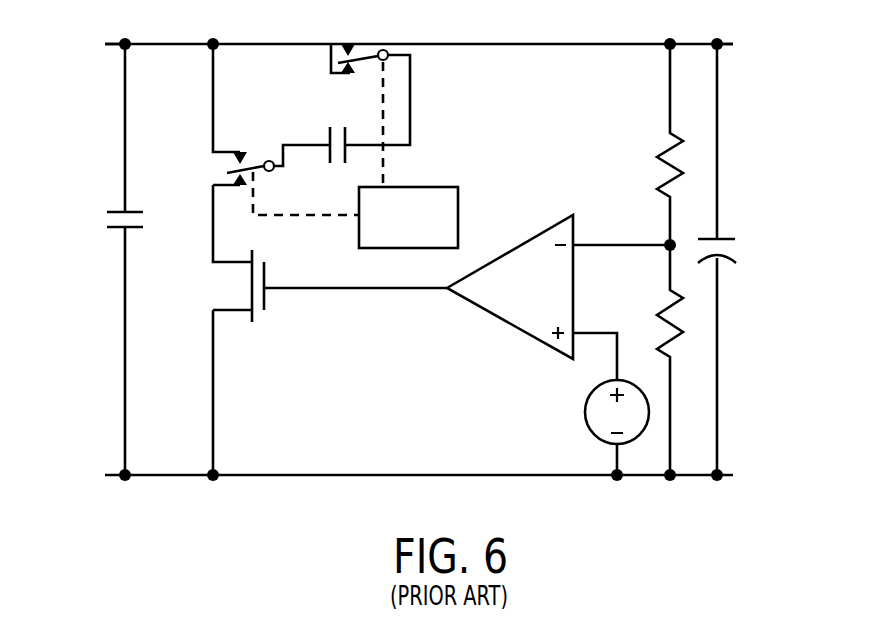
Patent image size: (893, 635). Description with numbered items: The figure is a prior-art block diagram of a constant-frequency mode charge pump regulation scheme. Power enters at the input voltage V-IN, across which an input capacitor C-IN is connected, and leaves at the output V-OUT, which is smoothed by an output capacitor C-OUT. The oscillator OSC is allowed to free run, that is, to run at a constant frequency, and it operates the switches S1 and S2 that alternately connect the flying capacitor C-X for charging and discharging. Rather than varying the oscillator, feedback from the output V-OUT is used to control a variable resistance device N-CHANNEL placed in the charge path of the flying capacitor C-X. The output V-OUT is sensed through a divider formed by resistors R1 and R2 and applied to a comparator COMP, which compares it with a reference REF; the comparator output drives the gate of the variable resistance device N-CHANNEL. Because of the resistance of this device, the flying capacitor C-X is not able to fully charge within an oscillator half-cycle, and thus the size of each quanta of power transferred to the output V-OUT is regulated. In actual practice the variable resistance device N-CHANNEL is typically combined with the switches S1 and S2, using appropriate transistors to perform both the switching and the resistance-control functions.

The input voltage V-IN is at (93, 44).
The output V-OUT is at (758, 44).
The input capacitor C-IN is at (100, 259).
The output capacitor C-OUT is at (750, 259).
The switch S1 is at (258, 115).
The switch S2 is at (370, 94).
The flying capacitor C-X is at (338, 132).
The oscillator OSC is at (355, 155).
The variable resistance device N-CHANNEL is at (289, 330).
The comparator COMP is at (558, 297).
The reference REF is at (598, 426).
The resistor R1 is at (655, 144).
The resistor R2 is at (654, 360).